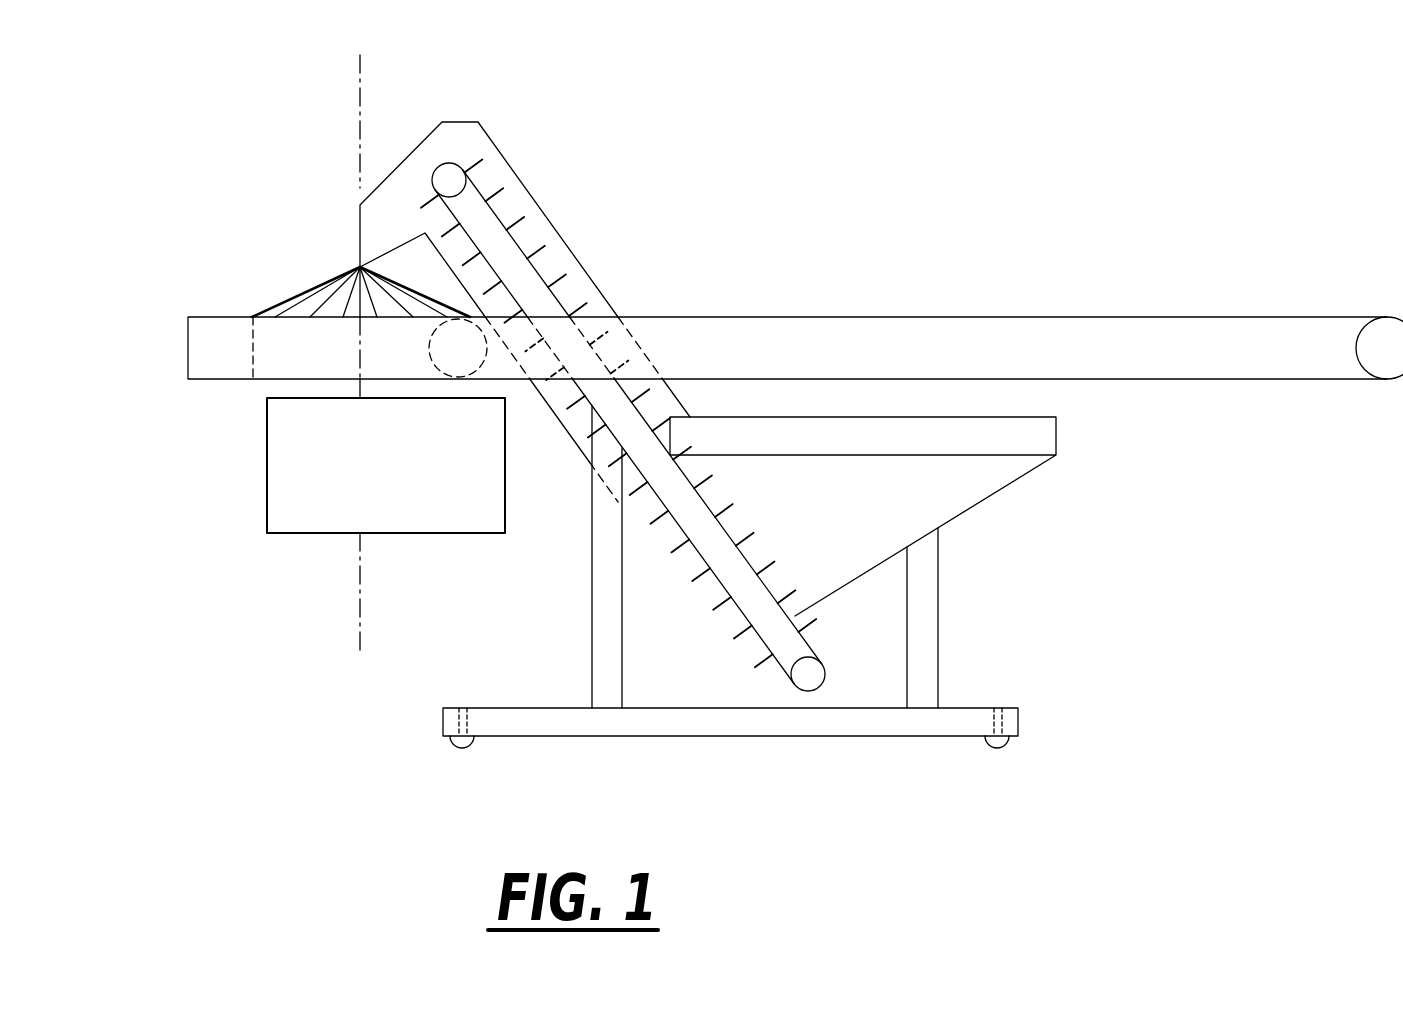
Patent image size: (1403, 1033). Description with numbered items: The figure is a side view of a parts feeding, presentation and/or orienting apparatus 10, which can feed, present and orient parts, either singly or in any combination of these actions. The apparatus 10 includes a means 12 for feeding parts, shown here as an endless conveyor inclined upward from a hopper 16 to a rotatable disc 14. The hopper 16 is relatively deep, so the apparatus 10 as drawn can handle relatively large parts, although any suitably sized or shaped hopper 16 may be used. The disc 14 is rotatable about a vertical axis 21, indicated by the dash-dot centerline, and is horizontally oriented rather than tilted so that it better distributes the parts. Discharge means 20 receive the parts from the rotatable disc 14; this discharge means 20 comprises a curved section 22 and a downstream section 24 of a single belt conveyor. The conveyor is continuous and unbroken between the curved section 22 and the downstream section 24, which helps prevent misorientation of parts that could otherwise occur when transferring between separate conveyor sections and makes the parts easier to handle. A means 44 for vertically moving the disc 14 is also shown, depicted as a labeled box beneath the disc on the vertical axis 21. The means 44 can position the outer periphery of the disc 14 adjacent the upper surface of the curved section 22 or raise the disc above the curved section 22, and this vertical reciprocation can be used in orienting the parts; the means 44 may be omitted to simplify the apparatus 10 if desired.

The parts feeding, presentation and/or orienting apparatus 10 is at (730, 198).
The means for feeding parts 12 is at (530, 247).
The rotatable disc 14 is at (305, 300).
The hopper 16 is at (955, 505).
The discharge means 20 is at (770, 300).
The vertical axis 21 is at (345, 84).
The curved section 22 is at (206, 317).
The downstream section 24 is at (811, 317).
The means for vertically moving the disc 44 is at (267, 500).